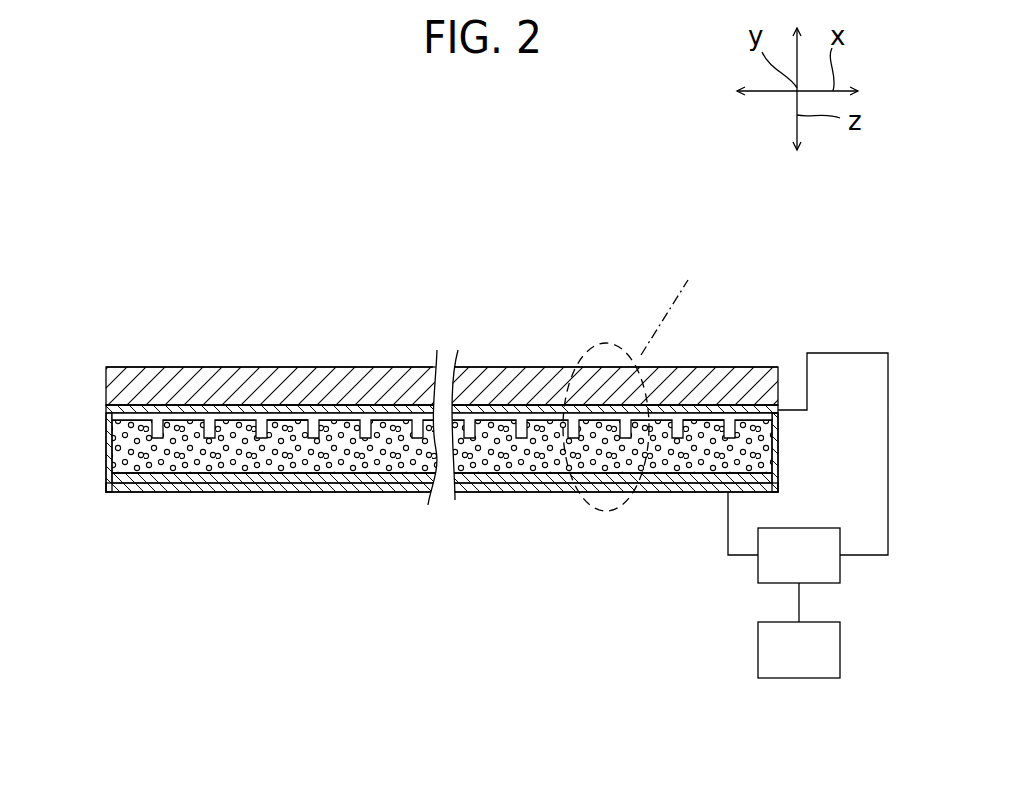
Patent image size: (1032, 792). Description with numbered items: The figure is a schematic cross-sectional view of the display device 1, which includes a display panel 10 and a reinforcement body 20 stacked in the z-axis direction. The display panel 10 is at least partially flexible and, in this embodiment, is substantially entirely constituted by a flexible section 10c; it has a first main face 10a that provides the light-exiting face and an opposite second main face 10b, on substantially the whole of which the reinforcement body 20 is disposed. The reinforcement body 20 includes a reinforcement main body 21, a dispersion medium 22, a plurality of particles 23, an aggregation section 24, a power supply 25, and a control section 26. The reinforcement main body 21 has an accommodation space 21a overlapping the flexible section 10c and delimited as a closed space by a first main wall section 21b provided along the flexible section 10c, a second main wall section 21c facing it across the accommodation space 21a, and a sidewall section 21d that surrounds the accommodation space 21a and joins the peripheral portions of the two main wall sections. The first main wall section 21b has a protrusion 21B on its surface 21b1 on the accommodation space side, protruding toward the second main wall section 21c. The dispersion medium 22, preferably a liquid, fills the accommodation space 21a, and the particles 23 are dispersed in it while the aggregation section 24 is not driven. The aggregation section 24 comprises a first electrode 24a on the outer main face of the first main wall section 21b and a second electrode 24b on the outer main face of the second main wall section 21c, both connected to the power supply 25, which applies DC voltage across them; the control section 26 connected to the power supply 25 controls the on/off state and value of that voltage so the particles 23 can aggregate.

The display device 1 is at (430, 397).
The display panel 10 is at (442, 410).
The first main face 10a is at (270, 367).
The second main face 10b is at (180, 408).
The flexible section 10c is at (375, 367).
The reinforcement body 20 is at (430, 447).
The reinforcement main body 21 is at (403, 448).
The accommodation space 21a is at (772, 412).
The first main wall section 21b is at (705, 420).
The protrusion 21B is at (455, 434).
The surface 21b1 is at (282, 428).
The second main wall section 21c is at (693, 488).
The sidewall section 21d is at (106, 448).
The dispersion medium 22 is at (469, 342).
The particles 23 is at (460, 482).
The aggregation section 24 is at (442, 435).
The first electrode 24a is at (550, 420).
The second electrode 24b is at (547, 474).
The power supply 25 is at (840, 570).
The control section 26 is at (840, 647).